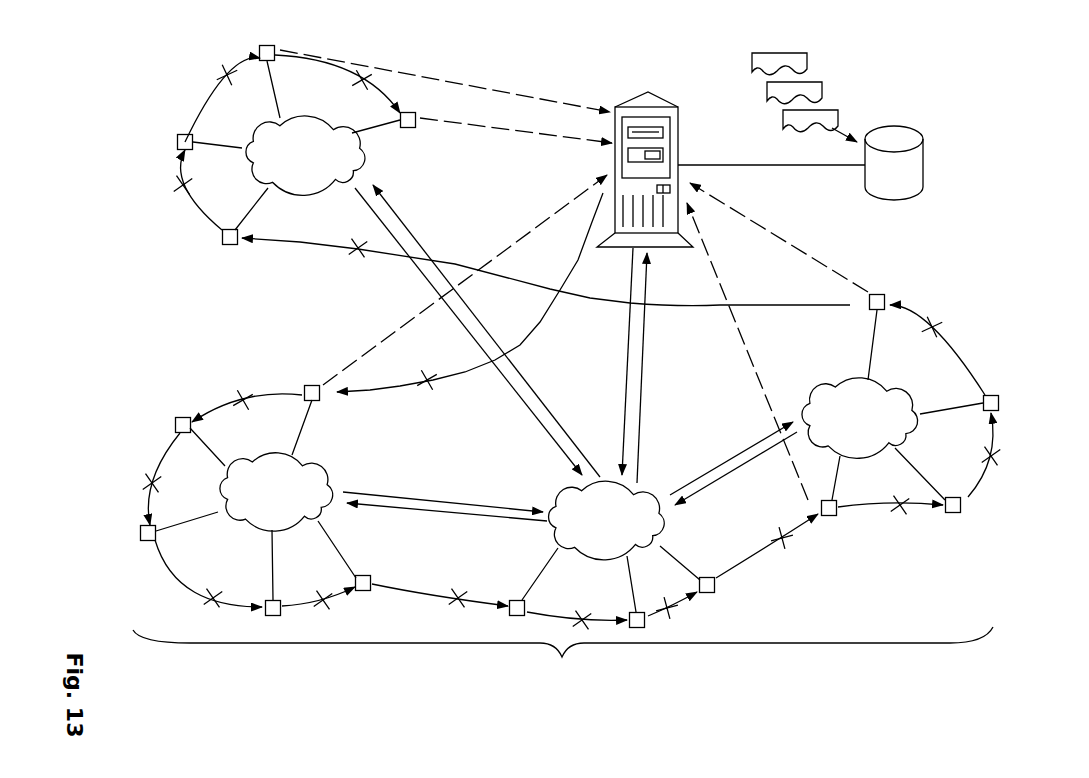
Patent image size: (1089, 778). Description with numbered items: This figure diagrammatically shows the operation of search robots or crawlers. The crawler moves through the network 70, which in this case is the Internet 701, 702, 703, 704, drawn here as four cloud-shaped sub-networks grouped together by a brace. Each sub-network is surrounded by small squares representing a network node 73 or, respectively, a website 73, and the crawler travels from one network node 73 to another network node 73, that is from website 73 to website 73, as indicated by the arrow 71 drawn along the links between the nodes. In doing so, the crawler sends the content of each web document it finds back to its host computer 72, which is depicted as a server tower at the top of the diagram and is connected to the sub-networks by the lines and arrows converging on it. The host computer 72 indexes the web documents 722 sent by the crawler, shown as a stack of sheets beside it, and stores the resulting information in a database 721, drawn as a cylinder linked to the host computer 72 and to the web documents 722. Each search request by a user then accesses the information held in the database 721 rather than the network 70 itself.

The network 70 is at (562, 657).
The arrow 71 is at (255, 392).
The host computer 72 is at (686, 146).
The network node 73 is at (276, 60).
The Internet 701 is at (276, 492).
The Internet 702 is at (607, 520).
The Internet 703 is at (860, 418).
The Internet 704 is at (305, 155).
The database 721 is at (800, 163).
The web documents 722 is at (813, 60).